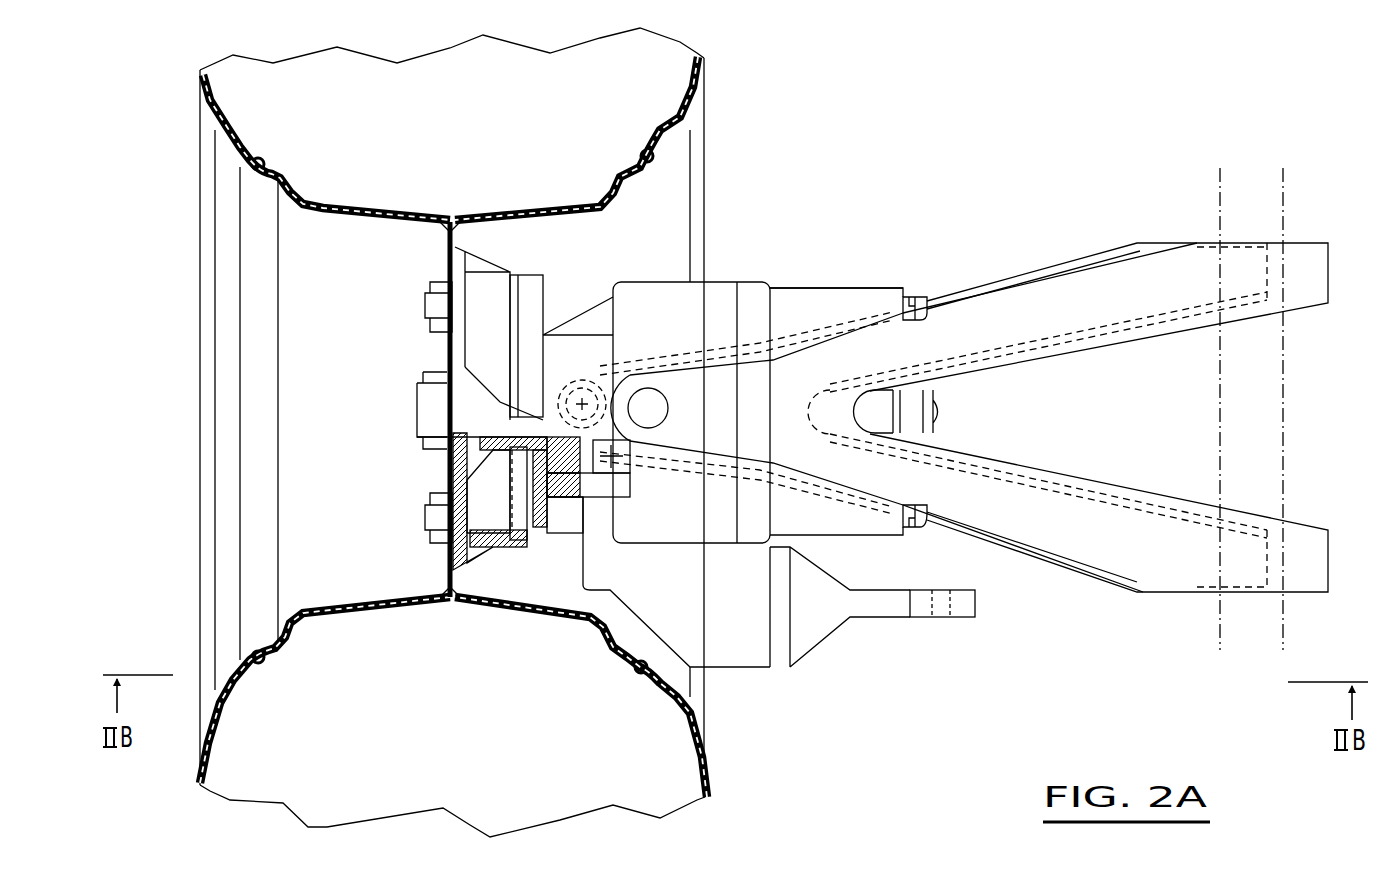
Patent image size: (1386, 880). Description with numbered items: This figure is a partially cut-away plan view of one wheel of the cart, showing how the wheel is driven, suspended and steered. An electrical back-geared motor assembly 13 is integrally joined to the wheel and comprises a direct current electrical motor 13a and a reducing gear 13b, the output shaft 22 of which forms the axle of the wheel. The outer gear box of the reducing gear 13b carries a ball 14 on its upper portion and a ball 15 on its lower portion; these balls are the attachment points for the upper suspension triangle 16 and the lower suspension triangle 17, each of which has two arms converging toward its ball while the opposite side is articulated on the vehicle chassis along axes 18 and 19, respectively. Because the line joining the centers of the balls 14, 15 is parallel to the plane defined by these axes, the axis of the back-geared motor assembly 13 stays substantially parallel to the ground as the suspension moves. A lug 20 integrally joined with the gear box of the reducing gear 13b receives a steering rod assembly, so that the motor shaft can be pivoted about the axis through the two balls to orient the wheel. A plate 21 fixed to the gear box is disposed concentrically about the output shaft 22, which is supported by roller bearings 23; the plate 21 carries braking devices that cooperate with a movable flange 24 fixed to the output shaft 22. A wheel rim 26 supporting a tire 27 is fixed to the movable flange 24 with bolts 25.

The back-geared motor assembly 13 is at (789, 280).
The direct current electrical motor 13a is at (845, 305).
The reducing gear 13b is at (714, 307).
The ball 14 is at (648, 402).
The ball 15 is at (575, 366).
The upper suspension triangle 16 is at (1093, 292).
The lower suspension triangle 17 is at (1043, 563).
The axis 18 is at (1287, 219).
The axis 19 is at (1219, 220).
The lug 20 is at (887, 606).
The plate 21 is at (540, 532).
The output shaft 22 is at (428, 410).
The roller bearings 23 is at (620, 474).
The movable flange 24 is at (486, 550).
The bolts 25 is at (425, 304).
The wheel rim 26 is at (341, 214).
The tire 27 is at (203, 104).